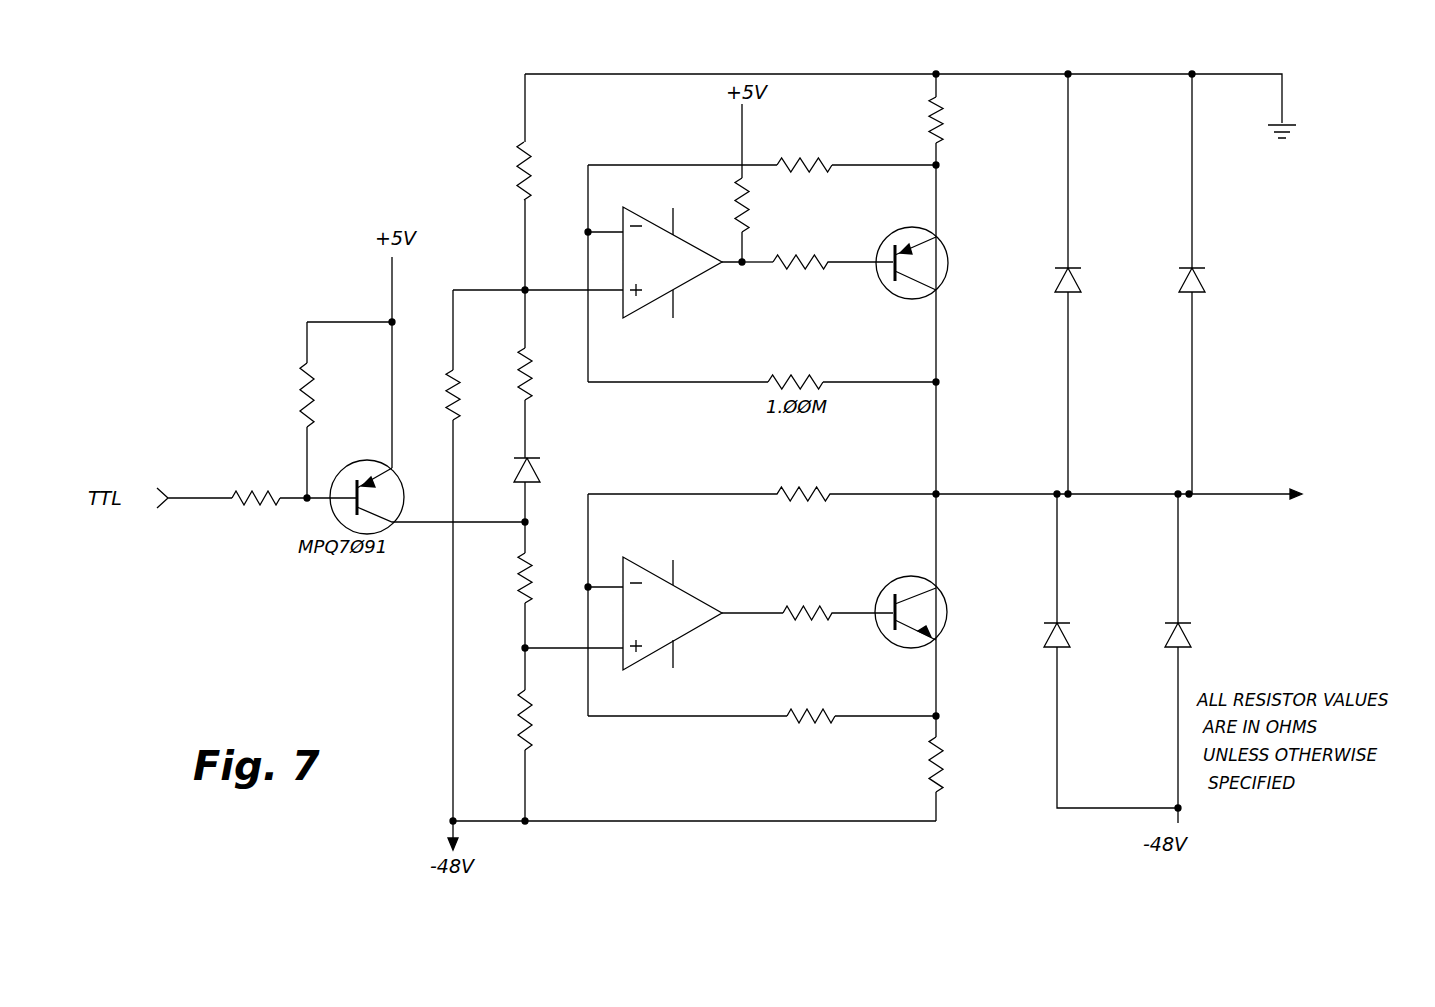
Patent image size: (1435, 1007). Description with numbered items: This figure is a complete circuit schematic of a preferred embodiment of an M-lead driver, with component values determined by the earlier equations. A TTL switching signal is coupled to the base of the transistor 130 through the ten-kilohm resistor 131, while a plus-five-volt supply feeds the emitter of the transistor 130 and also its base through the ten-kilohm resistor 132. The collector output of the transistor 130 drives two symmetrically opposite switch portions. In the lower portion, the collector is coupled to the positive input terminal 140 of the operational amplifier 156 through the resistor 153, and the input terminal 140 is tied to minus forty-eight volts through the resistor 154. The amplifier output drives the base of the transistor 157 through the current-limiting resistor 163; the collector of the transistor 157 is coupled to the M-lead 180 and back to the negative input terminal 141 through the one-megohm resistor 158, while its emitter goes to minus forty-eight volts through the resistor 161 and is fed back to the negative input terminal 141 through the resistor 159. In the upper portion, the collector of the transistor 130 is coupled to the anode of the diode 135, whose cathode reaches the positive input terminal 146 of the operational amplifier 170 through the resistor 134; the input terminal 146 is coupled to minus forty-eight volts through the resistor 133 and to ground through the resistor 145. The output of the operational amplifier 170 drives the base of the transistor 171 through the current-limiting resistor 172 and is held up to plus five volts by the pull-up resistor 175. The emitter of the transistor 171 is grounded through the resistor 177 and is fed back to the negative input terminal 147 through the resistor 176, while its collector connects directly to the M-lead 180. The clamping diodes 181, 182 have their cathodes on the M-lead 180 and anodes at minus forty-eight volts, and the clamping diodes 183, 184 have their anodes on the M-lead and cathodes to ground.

The transistor 130 is at (420, 464).
The 10K ohm resistor 131 is at (245, 508).
The 10K ohm resistor 132 is at (300, 375).
The 158K ohm resistor 133 is at (465, 372).
The 10K ohm resistor 134 is at (556, 340).
The diode 135 is at (542, 456).
The positive input terminal 140 is at (562, 648).
The negative input terminal 141 is at (600, 587).
The 1K ohm resistor 145 is at (530, 155).
The positive input terminal 146 is at (556, 290).
The negative input terminal 147 is at (600, 232).
The 44.2K ohm resistor 153 is at (518, 586).
The 2.10K ohm resistor 154 is at (518, 740).
The operational amplifier 156 is at (690, 628).
The transistor 157 is at (945, 632).
The 1.0M ohm resistor 158 is at (808, 490).
The 47.5 Kohm resistor 159 is at (812, 708).
The 23.7 ohm resistor 161 is at (930, 766).
The 2.10K ohm resistor 163 is at (797, 606).
The operational amplifier 170 is at (698, 278).
The transistor 171 is at (943, 286).
The 1.5K ohm resistor 172 is at (798, 256).
The 47K ohm pull-up resistor 175 is at (750, 222).
The 5.23K ohm resistor 176 is at (822, 170).
The 4.99 ohm resistor 177 is at (942, 103).
The M-lead 180 is at (1256, 494).
The clamping diode 181 is at (1062, 623).
The clamping diode 182 is at (1190, 623).
The clamping diode 183 is at (1070, 270).
The clamping diode 184 is at (1196, 268).